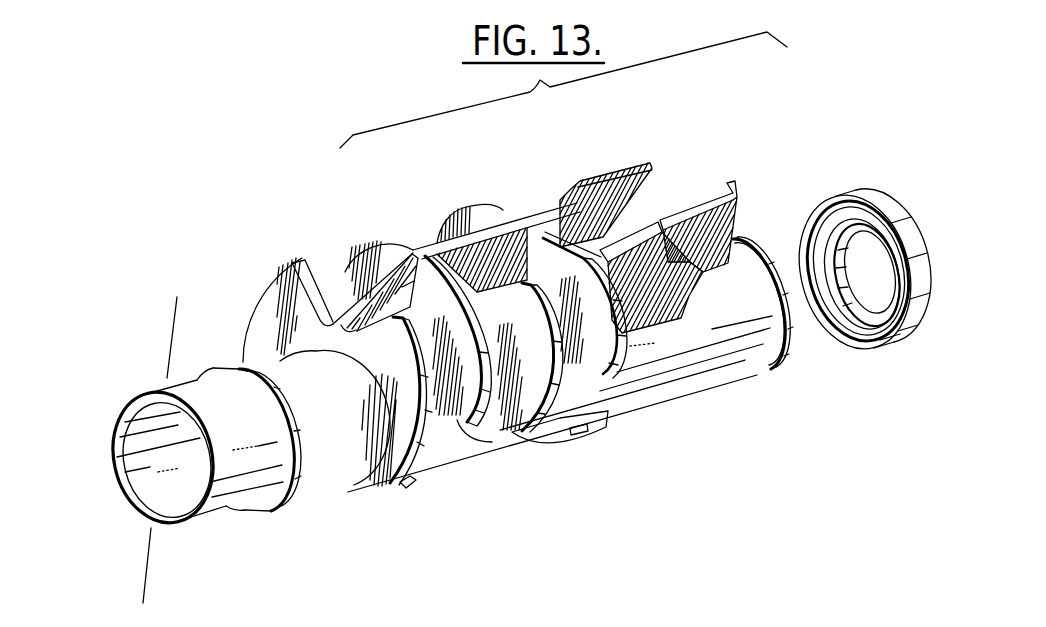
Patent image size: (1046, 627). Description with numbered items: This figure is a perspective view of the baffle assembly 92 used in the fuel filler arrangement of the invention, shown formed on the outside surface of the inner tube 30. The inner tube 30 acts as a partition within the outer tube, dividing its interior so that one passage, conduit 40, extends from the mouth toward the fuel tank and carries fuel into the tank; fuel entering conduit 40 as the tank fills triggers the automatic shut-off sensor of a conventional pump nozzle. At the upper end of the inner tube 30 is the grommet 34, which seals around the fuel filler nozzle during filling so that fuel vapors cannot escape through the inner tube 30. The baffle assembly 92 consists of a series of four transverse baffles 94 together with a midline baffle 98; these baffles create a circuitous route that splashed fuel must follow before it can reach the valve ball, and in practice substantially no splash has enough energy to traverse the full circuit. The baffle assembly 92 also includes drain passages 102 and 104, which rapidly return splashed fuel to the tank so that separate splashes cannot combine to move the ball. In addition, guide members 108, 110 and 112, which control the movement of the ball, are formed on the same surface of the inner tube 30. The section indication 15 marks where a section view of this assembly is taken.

The section line 15- 15 is at (200, 332).
The inner tube 30 is at (677, 383).
The grommet 34 is at (893, 216).
The conduit 40 is at (173, 493).
The baffle assembly 92 is at (302, 237).
The transverse baffles 94 is at (380, 473).
The midline baffle 98 is at (482, 253).
The drain passage 102 is at (506, 430).
The drain passage 104 is at (402, 487).
The guide member 108 is at (720, 237).
The guide member 110 is at (652, 306).
The guide member 112 is at (613, 190).